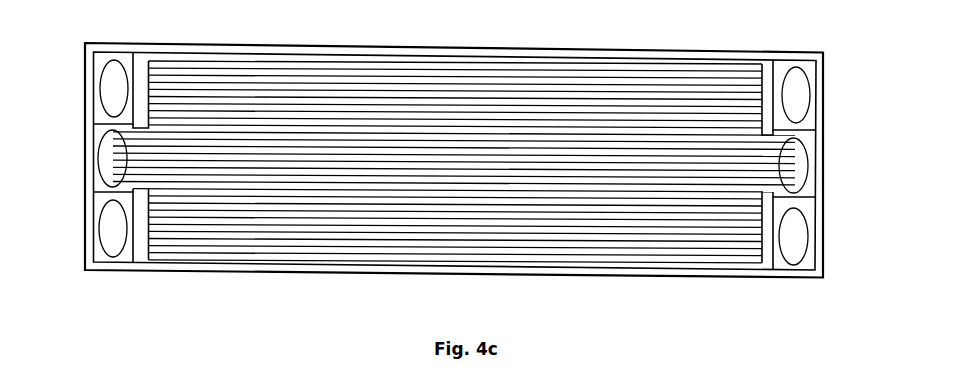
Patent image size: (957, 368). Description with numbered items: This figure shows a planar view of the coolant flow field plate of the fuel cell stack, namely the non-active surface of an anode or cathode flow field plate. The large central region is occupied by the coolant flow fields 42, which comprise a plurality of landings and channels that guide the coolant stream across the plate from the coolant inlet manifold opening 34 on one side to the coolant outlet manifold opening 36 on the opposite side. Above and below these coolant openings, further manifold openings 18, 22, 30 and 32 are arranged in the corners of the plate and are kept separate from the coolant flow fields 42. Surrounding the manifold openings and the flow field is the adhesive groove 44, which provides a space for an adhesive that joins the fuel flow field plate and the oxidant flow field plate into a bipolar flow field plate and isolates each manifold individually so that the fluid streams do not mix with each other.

The fuel inlet port 18 is at (104, 94).
The oxidant inlet port 22 is at (102, 235).
The coolant outlet manifold opening 36 is at (104, 164).
The fuel outlet port 30 is at (804, 98).
The oxidant outlet port 32 is at (804, 240).
The coolant inlet manifold opening 34 is at (804, 170).
The coolant flow fields 42 is at (518, 255).
The adhesive groove 44 is at (786, 58).